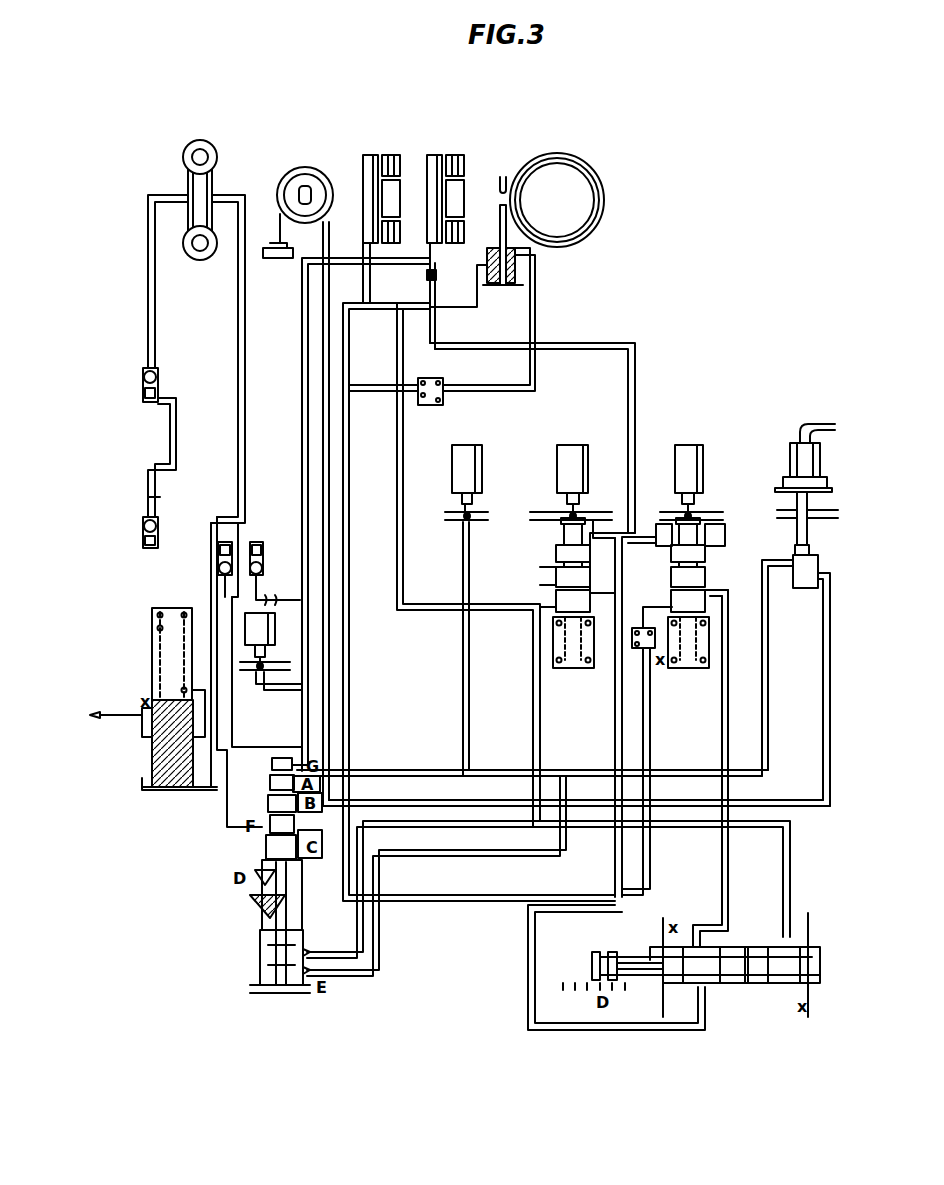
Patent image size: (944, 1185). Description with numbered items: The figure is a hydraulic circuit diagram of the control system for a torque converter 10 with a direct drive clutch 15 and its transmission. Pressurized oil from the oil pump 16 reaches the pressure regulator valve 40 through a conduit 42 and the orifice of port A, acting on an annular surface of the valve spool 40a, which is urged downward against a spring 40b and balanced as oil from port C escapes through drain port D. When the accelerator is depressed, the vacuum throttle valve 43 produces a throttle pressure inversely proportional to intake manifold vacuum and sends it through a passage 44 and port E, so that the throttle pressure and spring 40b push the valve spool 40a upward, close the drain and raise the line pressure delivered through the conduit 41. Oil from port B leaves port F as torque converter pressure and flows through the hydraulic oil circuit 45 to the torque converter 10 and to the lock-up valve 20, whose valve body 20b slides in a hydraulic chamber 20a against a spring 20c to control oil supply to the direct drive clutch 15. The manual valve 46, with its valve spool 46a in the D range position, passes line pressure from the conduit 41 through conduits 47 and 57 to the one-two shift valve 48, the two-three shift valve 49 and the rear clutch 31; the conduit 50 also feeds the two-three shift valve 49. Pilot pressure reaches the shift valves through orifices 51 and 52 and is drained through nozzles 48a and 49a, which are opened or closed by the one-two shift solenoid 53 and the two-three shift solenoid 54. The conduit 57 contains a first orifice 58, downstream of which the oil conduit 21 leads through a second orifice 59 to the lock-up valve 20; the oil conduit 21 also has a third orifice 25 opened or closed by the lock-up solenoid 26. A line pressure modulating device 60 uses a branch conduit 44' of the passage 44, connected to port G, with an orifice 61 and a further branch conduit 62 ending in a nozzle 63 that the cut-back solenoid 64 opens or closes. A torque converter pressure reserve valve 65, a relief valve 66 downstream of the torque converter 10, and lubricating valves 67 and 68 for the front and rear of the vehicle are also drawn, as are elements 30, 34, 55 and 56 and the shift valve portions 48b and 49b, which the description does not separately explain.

The torque converter 10 is at (215, 148).
The direct drive clutch 15 is at (105, 715).
The oil pump 16 is at (305, 168).
The lock-up valve 20 is at (148, 694).
The hydraulic chamber 20a is at (195, 785).
The valve body 20b is at (160, 765).
The spring 20c is at (152, 640).
The oil conduit 21 is at (250, 750).
The third orifice 25 is at (267, 693).
The lock-up solenoid 26 is at (275, 632).
The shift valve 30 is at (380, 155).
The rear clutch 31 is at (450, 155).
The governor 34 is at (582, 160).
The pressure regulator valve 40 is at (245, 875).
The valve spool 40a is at (266, 845).
The spring 40b is at (258, 905).
The conduit 41 is at (420, 800).
The conduit 42 is at (329, 685).
The vacuum throttle valve 43 is at (777, 542).
The passage 44 is at (796, 683).
The branch conduit 44' is at (532, 748).
The hydraulic oil circuit 45 is at (245, 395).
The manual valve 46 is at (714, 958).
The valve spool 46a is at (732, 988).
The conduit 47 is at (528, 985).
The 1-2 shift valve 48 is at (585, 553).
The nozzle 48a is at (580, 517).
The shift valve land 48b is at (557, 550).
The 2-3 shift valve 49 is at (697, 669).
The nozzle 49a is at (700, 524).
The shift valve land 49b is at (705, 585).
The conduit 50 is at (720, 870).
The orifice 51 is at (635, 535).
The orifice 52 is at (675, 566).
The 1-2 shift solenoid 53 is at (573, 455).
The 2-3 shift solenoid 54 is at (688, 455).
The passage 55 is at (495, 610).
The drain passage 56 is at (452, 900).
The conduit 57 is at (590, 343).
The first orifice 58 is at (428, 275).
The second orifice 59 is at (302, 322).
The line pressure modulating device 60 is at (493, 478).
The orifice 61 is at (510, 772).
The branch conduit 62 is at (463, 700).
The nozzle 63 is at (478, 510).
The cut-back solenoid 64 is at (456, 468).
The torque converter pressure reserve valve 65 is at (158, 378).
The relief valve 66 is at (158, 528).
The lubricating valve 67 is at (225, 542).
The lubricating valve 68 is at (257, 542).